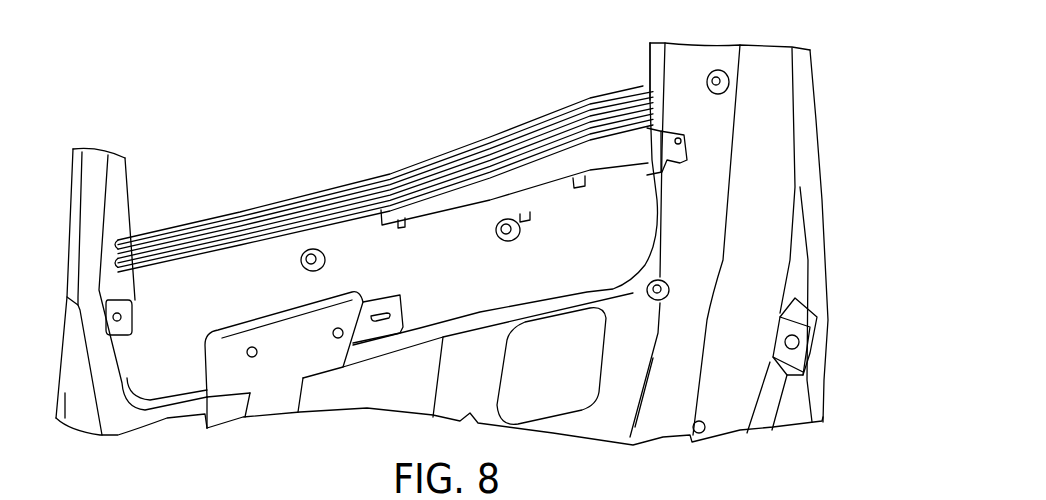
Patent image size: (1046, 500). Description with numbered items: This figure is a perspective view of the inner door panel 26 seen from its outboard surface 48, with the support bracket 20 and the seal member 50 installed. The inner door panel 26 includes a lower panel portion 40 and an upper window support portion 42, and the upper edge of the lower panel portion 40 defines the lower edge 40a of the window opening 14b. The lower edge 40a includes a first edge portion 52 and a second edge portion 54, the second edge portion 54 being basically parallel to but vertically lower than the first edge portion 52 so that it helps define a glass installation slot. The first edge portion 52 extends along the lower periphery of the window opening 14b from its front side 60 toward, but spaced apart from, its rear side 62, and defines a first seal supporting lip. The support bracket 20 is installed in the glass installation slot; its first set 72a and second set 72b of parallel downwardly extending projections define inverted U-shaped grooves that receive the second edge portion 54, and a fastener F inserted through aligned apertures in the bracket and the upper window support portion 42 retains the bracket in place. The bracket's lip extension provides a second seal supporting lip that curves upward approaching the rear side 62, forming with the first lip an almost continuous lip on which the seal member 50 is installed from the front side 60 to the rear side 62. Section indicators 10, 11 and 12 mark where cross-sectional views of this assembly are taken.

The section line 10- 10 is at (373, 177).
The section line 11- 11 is at (277, 197).
The section line 12- 12 is at (523, 120).
The window opening 14b is at (650, 62).
The support bracket 20 is at (610, 148).
The inner door panel 26 is at (826, 141).
The lower panel portion 40 is at (760, 238).
The lower edge of the window opening 40a is at (260, 257).
The upper window support portion 42 is at (685, 67).
The outboard surface 48 is at (153, 363).
The seal member 50 is at (408, 186).
The first edge portion 52 is at (203, 278).
The second edge portion 54 is at (553, 180).
The front side of the window opening 60 is at (125, 190).
The rear side of the window opening 62 is at (652, 48).
The first set of parallel downwardly extending projections 72a is at (531, 225).
The second set of parallel downwardly extending projections 72b is at (585, 190).
The fastener F is at (680, 137).